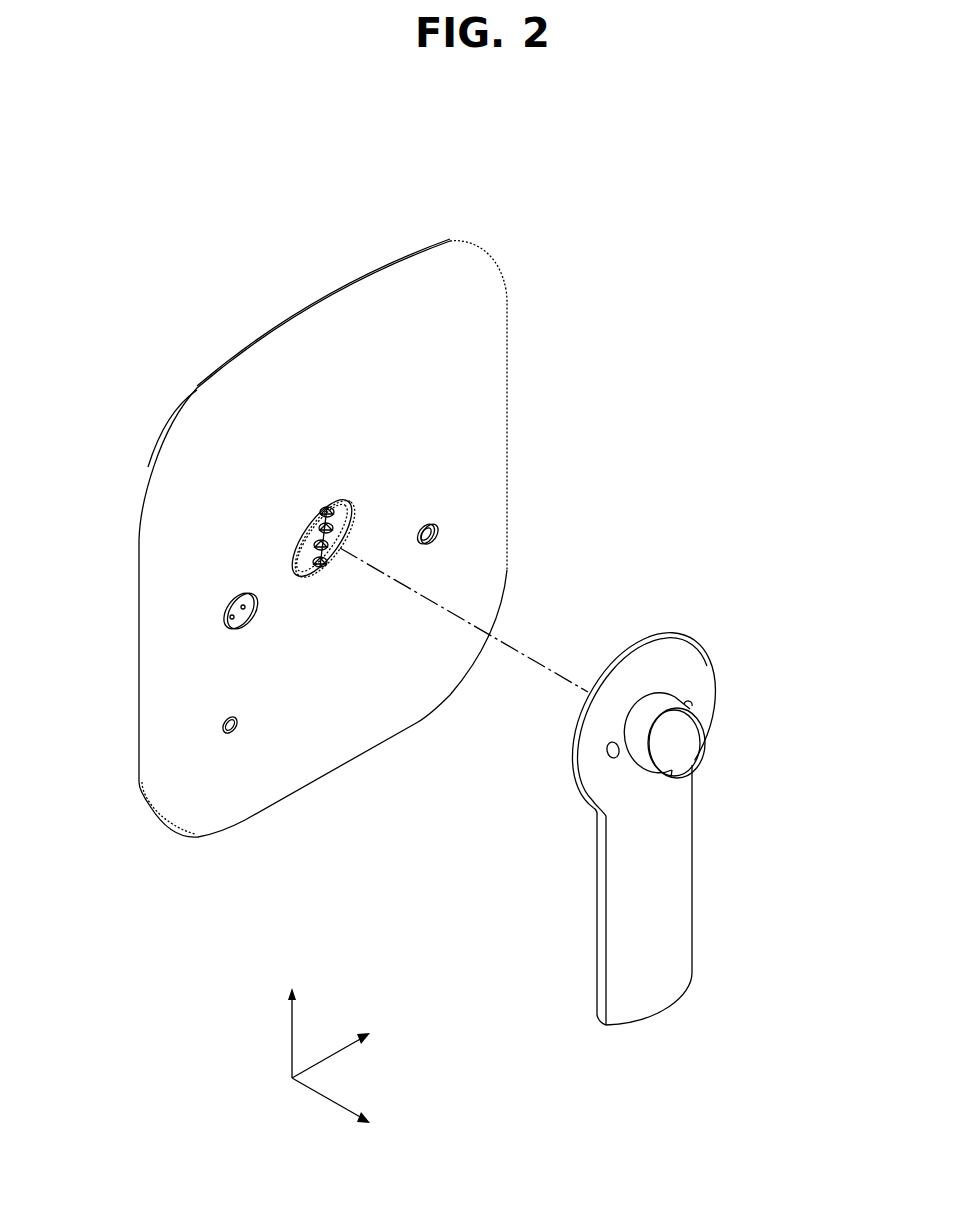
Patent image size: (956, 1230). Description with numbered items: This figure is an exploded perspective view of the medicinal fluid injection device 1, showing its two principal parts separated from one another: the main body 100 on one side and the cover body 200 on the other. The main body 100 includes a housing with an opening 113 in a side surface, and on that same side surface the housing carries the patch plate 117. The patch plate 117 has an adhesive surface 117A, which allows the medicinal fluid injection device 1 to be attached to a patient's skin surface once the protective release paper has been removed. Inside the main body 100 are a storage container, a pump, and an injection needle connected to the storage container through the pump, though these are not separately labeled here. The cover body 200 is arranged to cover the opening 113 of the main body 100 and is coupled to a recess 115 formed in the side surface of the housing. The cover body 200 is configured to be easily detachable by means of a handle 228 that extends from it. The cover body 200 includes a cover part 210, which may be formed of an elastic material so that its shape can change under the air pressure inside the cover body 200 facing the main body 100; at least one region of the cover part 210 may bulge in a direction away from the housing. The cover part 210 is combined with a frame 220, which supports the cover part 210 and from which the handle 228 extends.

The medicinal fluid injection device 1 is at (714, 258).
The main body 100 is at (166, 396).
The patch plate 117 is at (382, 268).
The adhesive surface 117A is at (488, 293).
The opening 113 is at (332, 528).
The recess 115 is at (327, 512).
The cover body 200 is at (684, 618).
The cover part 210 is at (677, 741).
The frame 220 is at (672, 874).
The handle 228 is at (632, 1008).